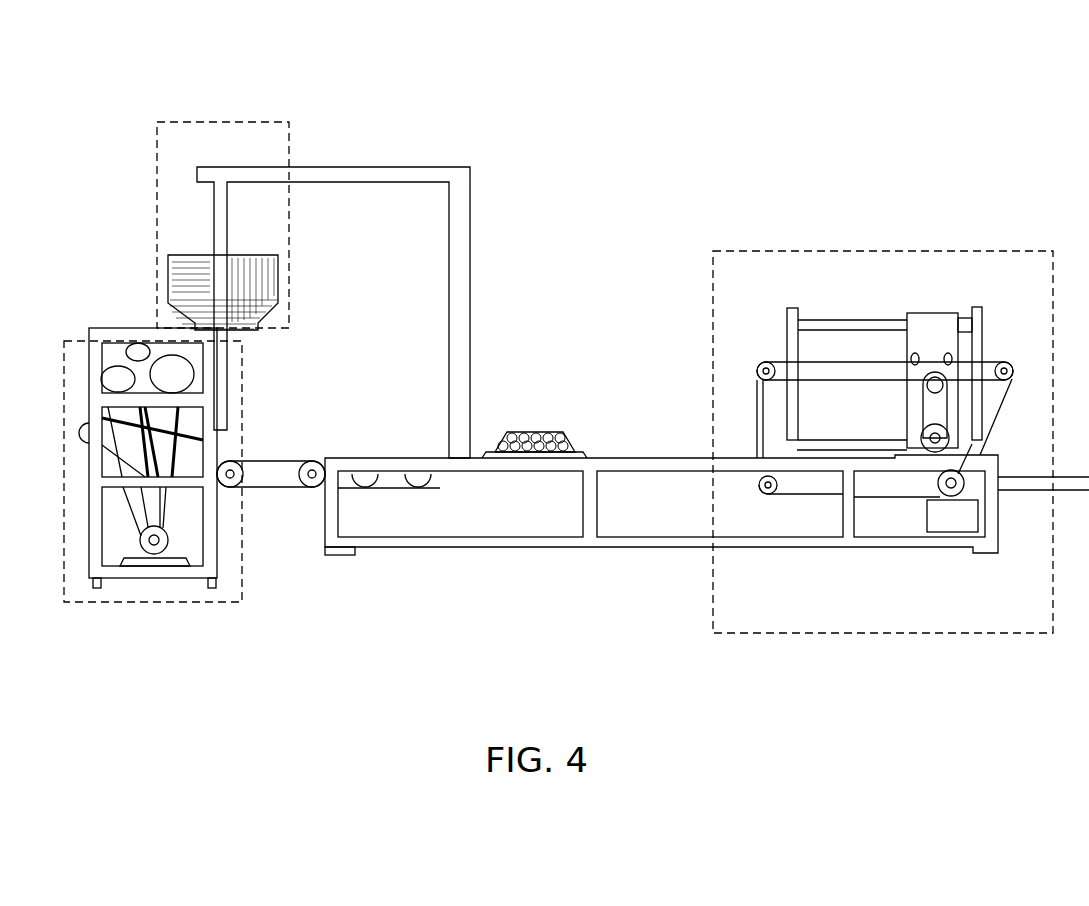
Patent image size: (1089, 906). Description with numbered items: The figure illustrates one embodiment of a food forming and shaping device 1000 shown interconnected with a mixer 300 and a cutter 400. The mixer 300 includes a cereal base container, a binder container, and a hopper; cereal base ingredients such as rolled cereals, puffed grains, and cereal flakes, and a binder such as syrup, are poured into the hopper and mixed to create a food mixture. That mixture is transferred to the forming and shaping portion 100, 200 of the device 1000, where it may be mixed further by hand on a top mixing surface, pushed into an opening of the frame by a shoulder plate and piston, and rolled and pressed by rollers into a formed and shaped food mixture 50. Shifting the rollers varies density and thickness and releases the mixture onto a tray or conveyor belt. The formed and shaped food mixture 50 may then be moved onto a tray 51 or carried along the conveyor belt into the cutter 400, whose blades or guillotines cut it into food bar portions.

The food forming and shaping device 1000 is at (946, 105).
The mixer 300 is at (229, 122).
The forming and shaping portion 100 is at (243, 390).
The forming and shaping portion 200 is at (148, 458).
The cutter 400 is at (801, 251).
The formed and shaped food mixture 50 is at (538, 436).
The tray 51 is at (587, 452).